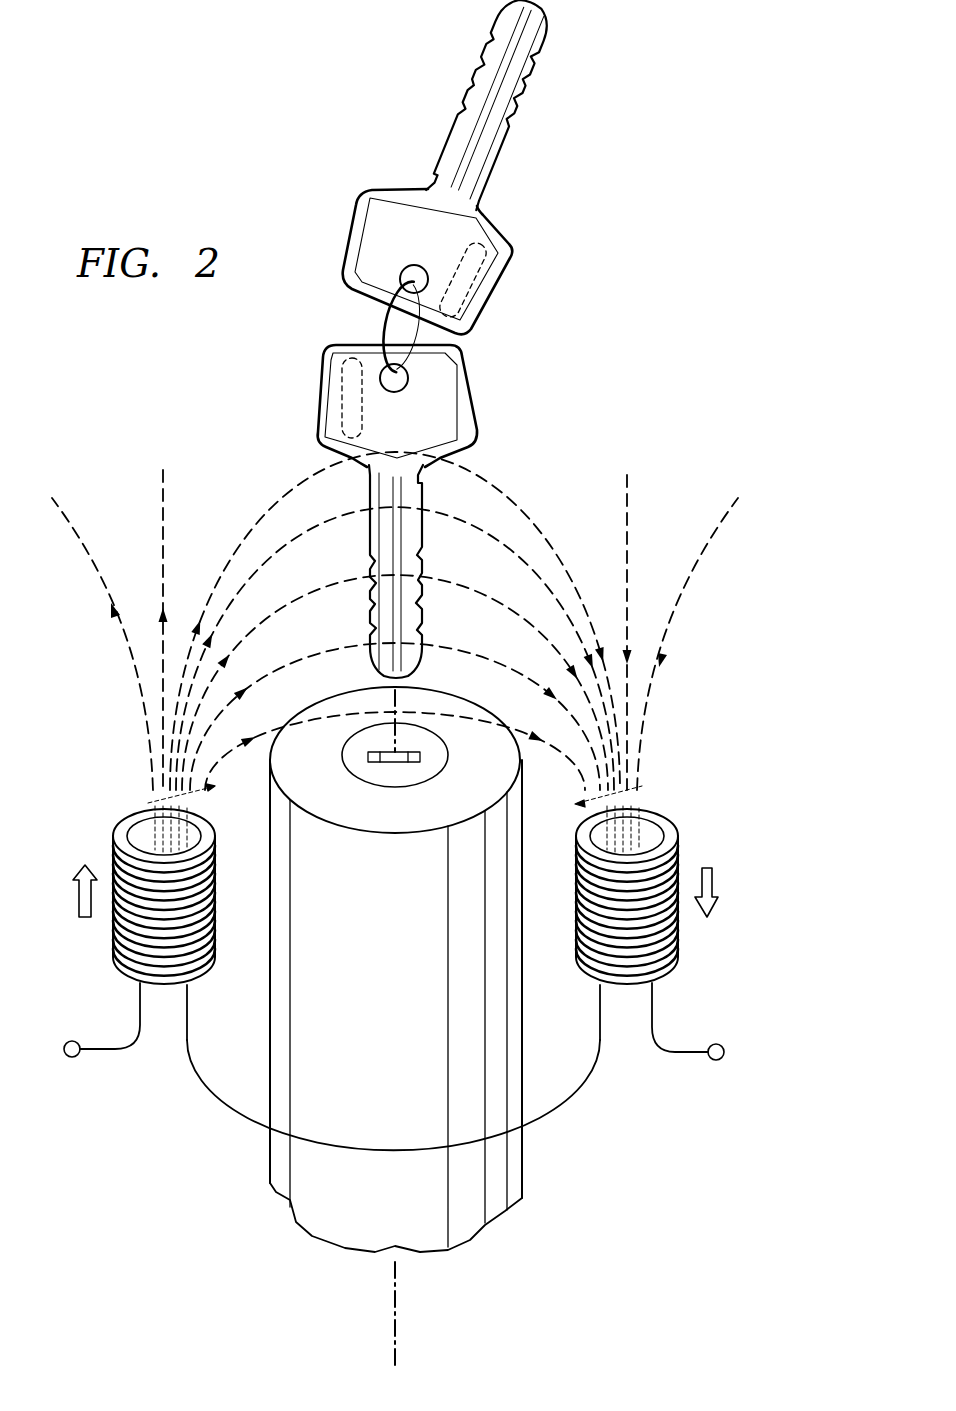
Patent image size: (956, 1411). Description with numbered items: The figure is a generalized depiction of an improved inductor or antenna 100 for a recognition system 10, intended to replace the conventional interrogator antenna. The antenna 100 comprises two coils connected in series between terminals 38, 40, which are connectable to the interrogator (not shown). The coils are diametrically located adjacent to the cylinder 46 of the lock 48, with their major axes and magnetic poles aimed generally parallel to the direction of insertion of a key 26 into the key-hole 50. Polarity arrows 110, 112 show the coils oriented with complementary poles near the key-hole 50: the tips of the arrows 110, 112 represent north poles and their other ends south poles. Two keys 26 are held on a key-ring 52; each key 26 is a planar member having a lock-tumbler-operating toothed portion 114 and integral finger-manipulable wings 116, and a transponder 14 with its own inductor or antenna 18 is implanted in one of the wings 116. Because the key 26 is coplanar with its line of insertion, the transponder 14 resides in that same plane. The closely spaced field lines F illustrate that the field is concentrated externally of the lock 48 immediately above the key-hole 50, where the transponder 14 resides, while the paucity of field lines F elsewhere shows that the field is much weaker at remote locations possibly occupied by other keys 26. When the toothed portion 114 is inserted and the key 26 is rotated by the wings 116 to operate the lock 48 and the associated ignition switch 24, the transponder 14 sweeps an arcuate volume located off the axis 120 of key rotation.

The recognition system 10 is at (270, 138).
The key 26 is at (430, 339).
The lock-tumbler-operating toothed portion 114 is at (548, 43).
The finger-manipulable wings 116 is at (350, 240).
The transponder 14 is at (416, 326).
The inductor or antenna 18 is at (452, 251).
The key-ring 52 is at (378, 323).
The ignition switch 24 is at (347, 969).
The lock 48 is at (347, 969).
The key-hole 50 is at (368, 756).
The cylinder 46 is at (522, 1160).
The inductor or antenna 100 is at (155, 1055).
The polarity arrow 110 is at (74, 896).
The polarity arrow 112 is at (716, 892).
The terminal 38 is at (63, 1043).
The terminal 40 is at (720, 1045).
The axis of key rotation 120 is at (398, 1335).
The field lines F is at (148, 790).